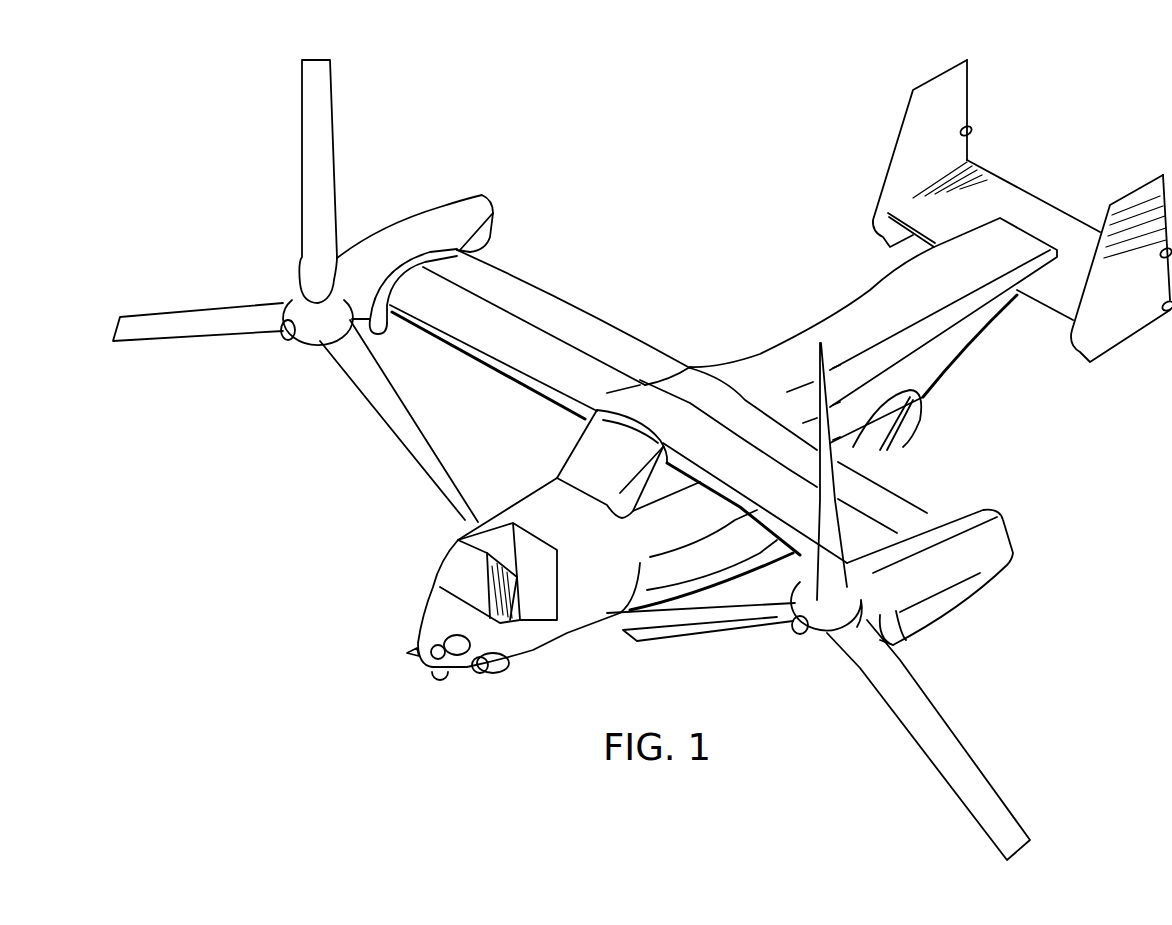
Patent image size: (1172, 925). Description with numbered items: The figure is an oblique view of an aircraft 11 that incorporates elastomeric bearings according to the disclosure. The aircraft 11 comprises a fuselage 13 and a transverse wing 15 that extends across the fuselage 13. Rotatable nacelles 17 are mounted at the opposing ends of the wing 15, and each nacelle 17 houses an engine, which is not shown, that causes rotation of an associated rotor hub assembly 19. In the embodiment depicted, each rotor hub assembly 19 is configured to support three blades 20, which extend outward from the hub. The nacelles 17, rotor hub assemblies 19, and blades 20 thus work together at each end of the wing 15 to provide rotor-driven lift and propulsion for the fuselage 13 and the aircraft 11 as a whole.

The aircraft 11 is at (754, 214).
The fuselage 13 is at (587, 613).
The transverse wing 15 is at (547, 311).
The rotatable nacelle 17 is at (983, 510).
The rotor hub assembly 19 is at (820, 637).
The blade 20 is at (937, 721).